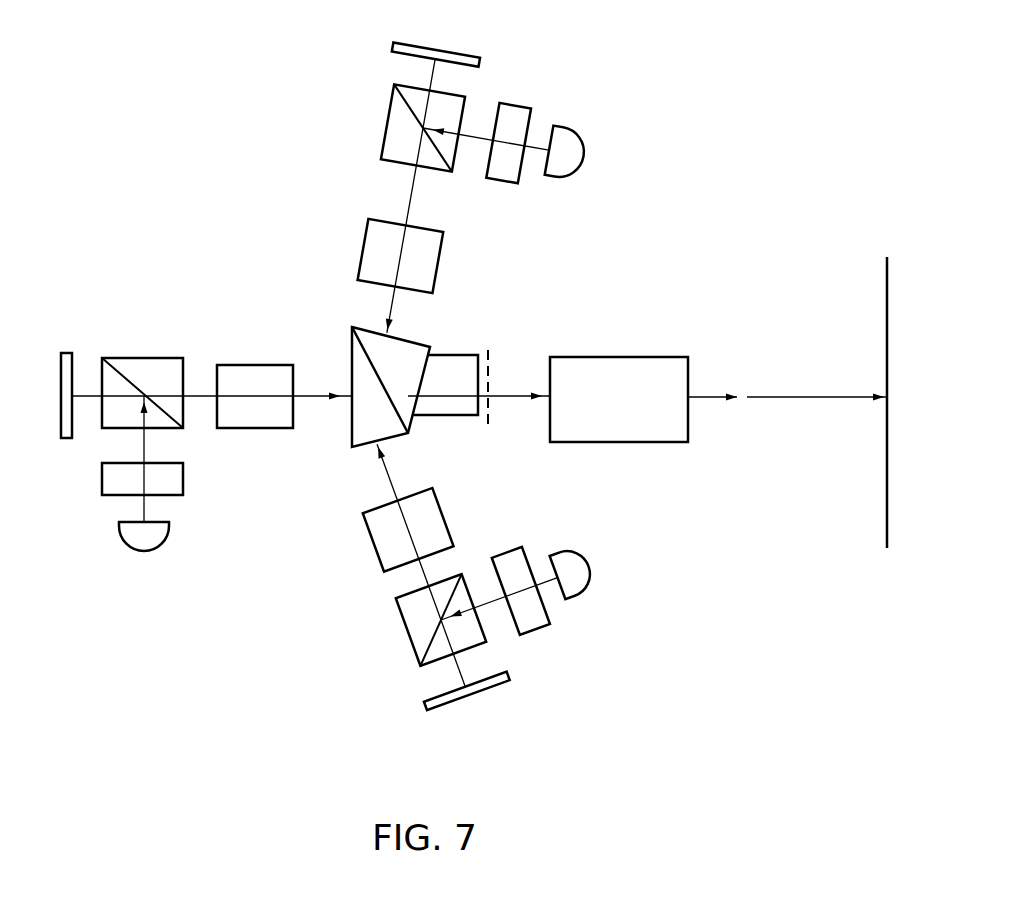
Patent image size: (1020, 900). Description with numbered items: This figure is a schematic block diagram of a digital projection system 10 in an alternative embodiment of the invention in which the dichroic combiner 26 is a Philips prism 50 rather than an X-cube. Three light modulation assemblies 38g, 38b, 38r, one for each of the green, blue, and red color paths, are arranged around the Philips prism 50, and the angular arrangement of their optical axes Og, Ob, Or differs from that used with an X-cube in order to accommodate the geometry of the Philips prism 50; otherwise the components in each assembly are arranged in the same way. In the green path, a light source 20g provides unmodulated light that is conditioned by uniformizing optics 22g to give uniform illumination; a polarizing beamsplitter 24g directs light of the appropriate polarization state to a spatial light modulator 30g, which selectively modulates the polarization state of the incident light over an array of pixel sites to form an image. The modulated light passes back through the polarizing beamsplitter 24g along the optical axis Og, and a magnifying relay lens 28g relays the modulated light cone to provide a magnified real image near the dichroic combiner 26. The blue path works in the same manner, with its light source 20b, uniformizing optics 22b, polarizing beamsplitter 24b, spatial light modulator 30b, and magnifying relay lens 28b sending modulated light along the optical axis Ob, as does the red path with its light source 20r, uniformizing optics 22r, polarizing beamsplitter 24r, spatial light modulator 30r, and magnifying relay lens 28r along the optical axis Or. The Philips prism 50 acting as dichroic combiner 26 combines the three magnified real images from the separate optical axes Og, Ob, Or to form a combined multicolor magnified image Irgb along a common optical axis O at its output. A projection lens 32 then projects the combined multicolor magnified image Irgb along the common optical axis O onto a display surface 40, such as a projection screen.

The digital projection system 10 is at (686, 639).
The light source 20g is at (152, 550).
The uniformizing optics 22g is at (100, 490).
The polarizing beamsplitter 24g is at (140, 358).
The magnifying relay lens 28g is at (250, 432).
The spatial light modulator 30g is at (66, 352).
The light modulation assembly 38g is at (175, 271).
The optical axis Og is at (320, 392).
The light source 20b is at (541, 130).
The uniformizing optics 22b is at (543, 118).
The polarizing beamsplitter 24b is at (380, 120).
The magnifying relay lens 28b is at (358, 232).
The spatial light modulator 30b is at (386, 53).
The light modulation assembly 38b is at (560, 228).
The optical axis Ob is at (363, 187).
The light source 20r is at (556, 581).
The uniformizing optics 22r is at (563, 605).
The polarizing beamsplitter 24r is at (392, 645).
The magnifying relay lens 28r is at (444, 517).
The spatial light modulator 30r is at (483, 724).
The light modulation assembly 38r is at (355, 612).
The optical axis Or is at (378, 581).
The Philips prism 50 is at (434, 366).
The dichroic combiner 26 is at (423, 342).
The combined multicolor magnified image Irgb is at (490, 375).
The projection lens 32 is at (620, 357).
The common optical axis O is at (800, 396).
The display surface 40 is at (886, 498).